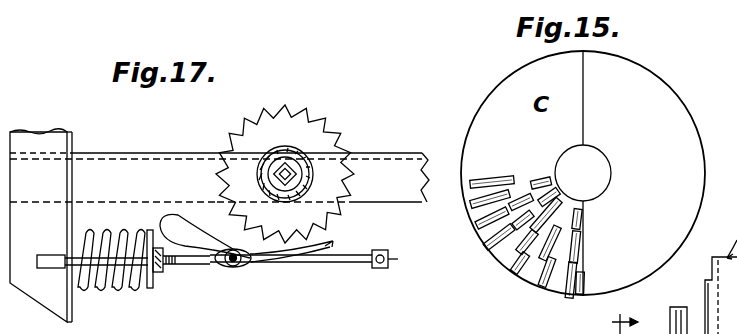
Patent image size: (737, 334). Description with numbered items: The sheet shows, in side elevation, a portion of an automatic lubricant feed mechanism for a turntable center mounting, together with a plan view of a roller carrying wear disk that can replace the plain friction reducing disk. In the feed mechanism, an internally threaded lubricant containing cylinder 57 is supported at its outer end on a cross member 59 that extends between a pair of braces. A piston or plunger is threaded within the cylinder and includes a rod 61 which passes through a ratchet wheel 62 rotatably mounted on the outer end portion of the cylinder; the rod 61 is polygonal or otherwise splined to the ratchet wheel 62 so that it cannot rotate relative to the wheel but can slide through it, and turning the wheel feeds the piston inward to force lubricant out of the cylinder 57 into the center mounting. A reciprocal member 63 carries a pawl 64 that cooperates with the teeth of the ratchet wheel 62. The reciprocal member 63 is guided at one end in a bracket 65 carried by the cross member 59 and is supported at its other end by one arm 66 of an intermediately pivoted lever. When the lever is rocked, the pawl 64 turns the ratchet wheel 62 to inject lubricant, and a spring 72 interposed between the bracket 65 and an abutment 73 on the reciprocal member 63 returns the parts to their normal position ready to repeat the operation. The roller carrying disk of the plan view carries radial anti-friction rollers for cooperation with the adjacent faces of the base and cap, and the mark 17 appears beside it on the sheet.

In FIG. 17, the bracket 65 is at (69, 134).
In FIG. 17, the cross member 59 is at (152, 163).
In FIG. 17, the ratchet wheel 62 is at (283, 118).
In FIG. 17, the lubricant containing cylinder 57 is at (300, 152).
In FIG. 17, the rod 61 is at (300, 172).
In FIG. 17, the pawl 64 is at (334, 241).
In FIG. 17, the reciprocal member 63 is at (325, 270).
In FIG. 17, the arm 66 is at (398, 259).
In FIG. 17, the spring 72 is at (110, 287).
In FIG. 17, the abutment 73 is at (158, 284).
In FIG. 15, the arrow indicator 17 is at (625, 314).